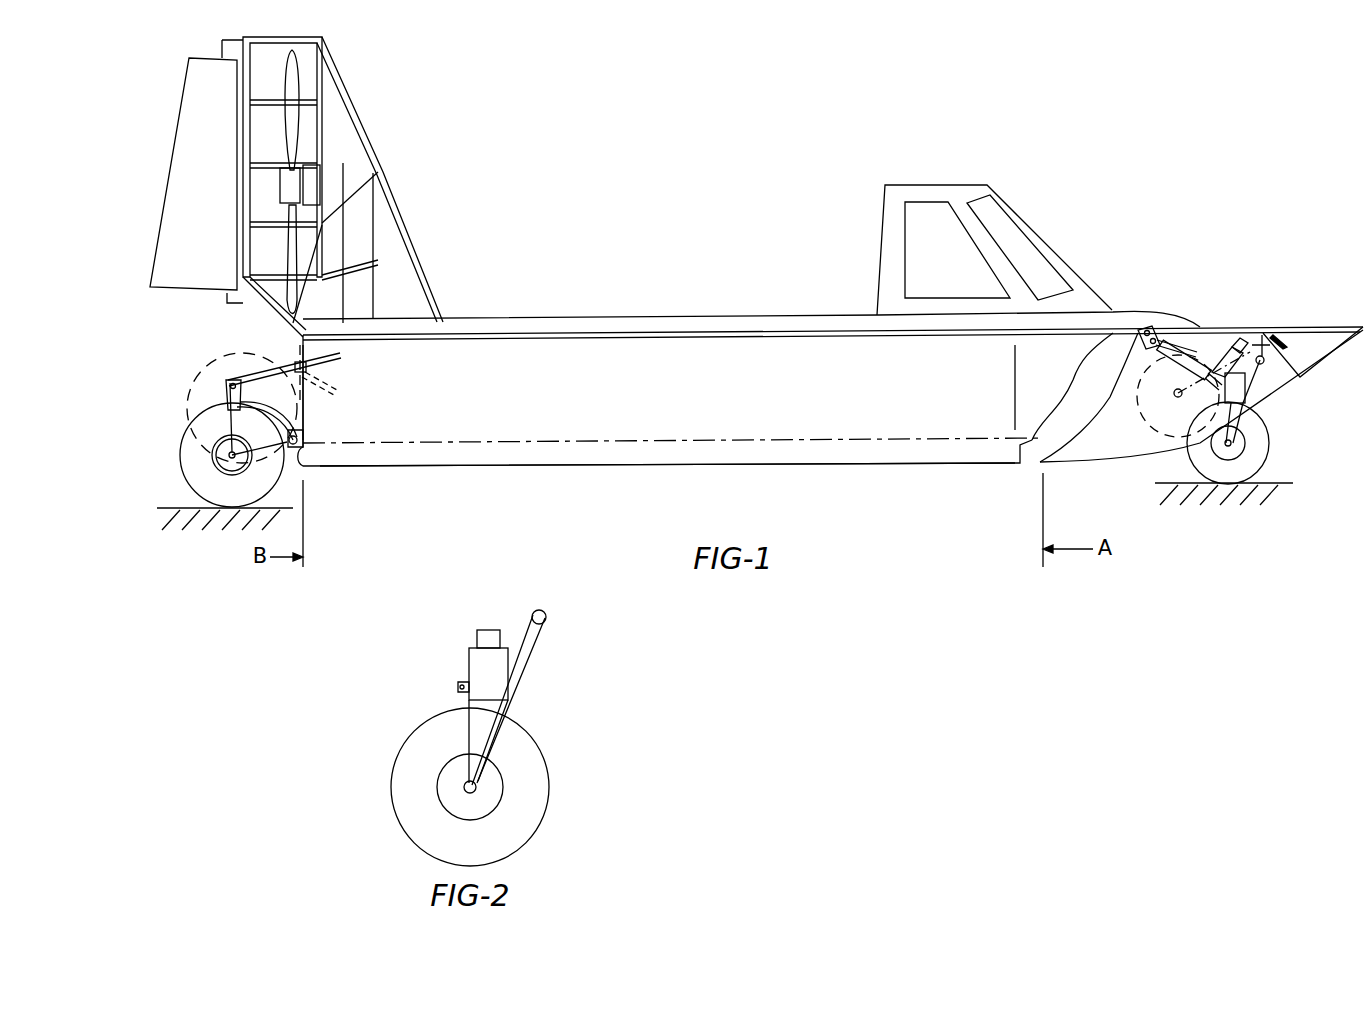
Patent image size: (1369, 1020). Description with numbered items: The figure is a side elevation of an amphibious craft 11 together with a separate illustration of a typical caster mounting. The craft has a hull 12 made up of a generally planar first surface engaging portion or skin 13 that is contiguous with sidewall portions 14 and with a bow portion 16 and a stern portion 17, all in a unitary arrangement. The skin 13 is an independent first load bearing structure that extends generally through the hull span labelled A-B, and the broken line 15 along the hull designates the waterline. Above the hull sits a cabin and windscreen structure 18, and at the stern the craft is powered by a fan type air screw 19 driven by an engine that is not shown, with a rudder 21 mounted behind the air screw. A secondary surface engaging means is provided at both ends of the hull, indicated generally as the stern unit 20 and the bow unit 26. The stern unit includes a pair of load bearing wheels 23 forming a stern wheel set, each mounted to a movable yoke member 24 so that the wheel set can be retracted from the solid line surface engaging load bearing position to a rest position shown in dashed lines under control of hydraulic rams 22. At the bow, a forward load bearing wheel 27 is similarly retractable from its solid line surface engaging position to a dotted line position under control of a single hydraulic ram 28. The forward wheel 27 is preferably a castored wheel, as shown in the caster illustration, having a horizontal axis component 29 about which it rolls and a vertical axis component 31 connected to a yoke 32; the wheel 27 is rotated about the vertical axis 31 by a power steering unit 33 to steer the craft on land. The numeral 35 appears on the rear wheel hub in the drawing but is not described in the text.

In FIG. 1, the amphibious craft 11 is at (1080, 222).
In FIG. 1, the hull 12 is at (890, 472).
In FIG. 1, the first surface engaging portion 13 is at (776, 465).
In FIG. 1, the sidewall portions 14 is at (718, 421).
In FIG. 1, the hull waterline 15 is at (468, 443).
In FIG. 1, the bow portion 16 is at (1110, 465).
In FIG. 1, the stern portion 17 is at (307, 445).
In FIG. 1, the cabin and windscreen structure 18 is at (942, 185).
In FIG. 1, the fan type air screw 19 is at (380, 150).
In FIG. 1, the secondary surface engaging means at the stern 20 is at (171, 457).
In FIG. 1, the rudder 21 is at (178, 250).
In FIG. 1, the hydraulic rams 22 is at (327, 367).
In FIG. 1, the load bearing wheels 23 is at (198, 497).
In FIG. 1, the movable yoke member 24 is at (1200, 373).
In FIG. 1, the secondary surface engaging means at the bow 26 is at (1235, 516).
In FIG. 1, the forward load bearing wheel 27 is at (1210, 473).
In FIG. 2, the forward load bearing wheel 27 is at (402, 808).
In FIG. 1, the hydraulic ram 28 is at (1172, 313).
In FIG. 2, the horizontal axis component 29 is at (477, 787).
In FIG. 2, the vertical axis component 31 is at (480, 632).
In FIG. 1, the yoke 32 is at (1255, 413).
In FIG. 1, the power steering unit 33 is at (1242, 382).
In FIG. 2, the power steering unit 33 is at (450, 662).
In FIG. 1, the wheel hub 35 is at (207, 462).